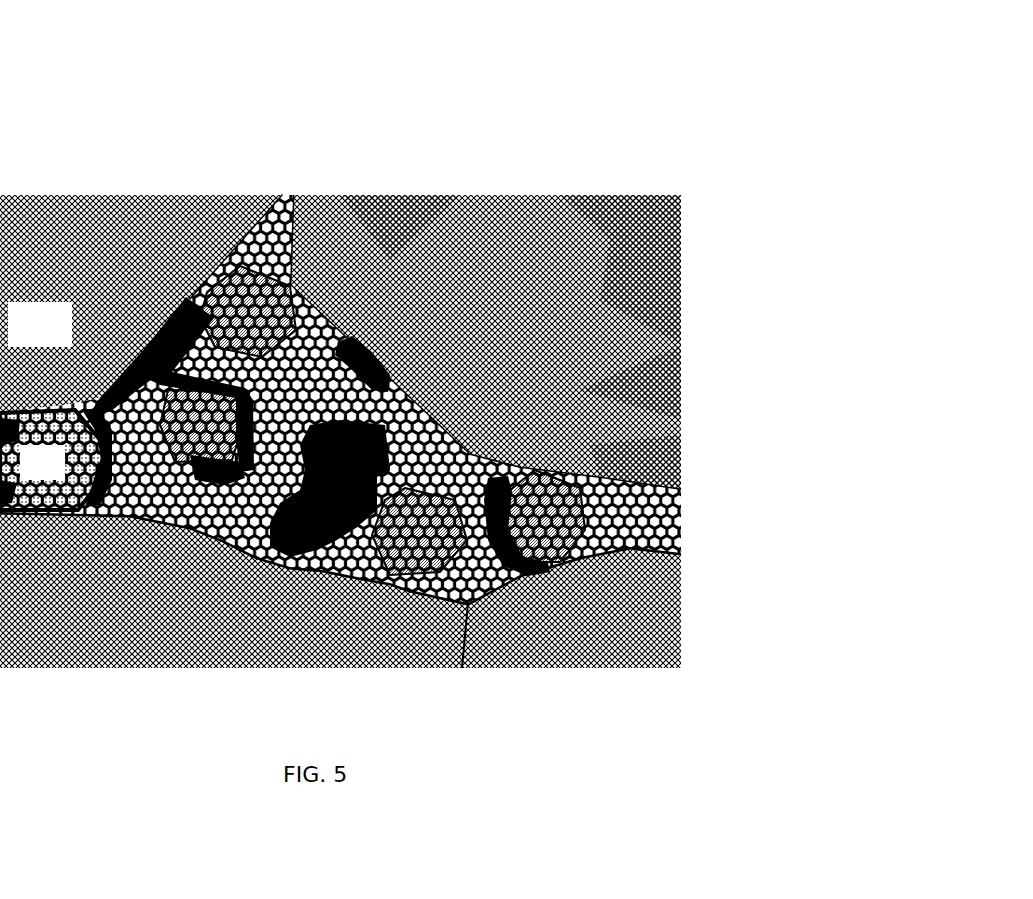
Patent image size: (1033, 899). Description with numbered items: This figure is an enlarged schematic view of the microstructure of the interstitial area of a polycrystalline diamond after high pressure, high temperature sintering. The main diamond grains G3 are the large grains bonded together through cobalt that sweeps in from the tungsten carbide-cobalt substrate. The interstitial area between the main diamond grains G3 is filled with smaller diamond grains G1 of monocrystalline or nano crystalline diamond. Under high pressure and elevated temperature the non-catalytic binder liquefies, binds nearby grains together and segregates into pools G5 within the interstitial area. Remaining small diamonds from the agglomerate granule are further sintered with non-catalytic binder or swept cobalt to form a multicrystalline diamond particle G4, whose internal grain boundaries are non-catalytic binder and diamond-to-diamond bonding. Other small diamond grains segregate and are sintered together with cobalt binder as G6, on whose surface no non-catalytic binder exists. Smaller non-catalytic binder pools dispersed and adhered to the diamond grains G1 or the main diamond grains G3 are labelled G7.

The diamond grains of monocrystalline or nano crystalline diamond G1 is at (52, 460).
The main diamond grains G3 is at (141, 303).
The multicrystalline diamond particle G4 is at (608, 195).
The non-catalytic binder pools G5 is at (512, 195).
The small diamond grains sintered together with cobalt binder G6 is at (688, 255).
The dispersed non-catalytic binder pools adhered to diamond G7 is at (405, 195).